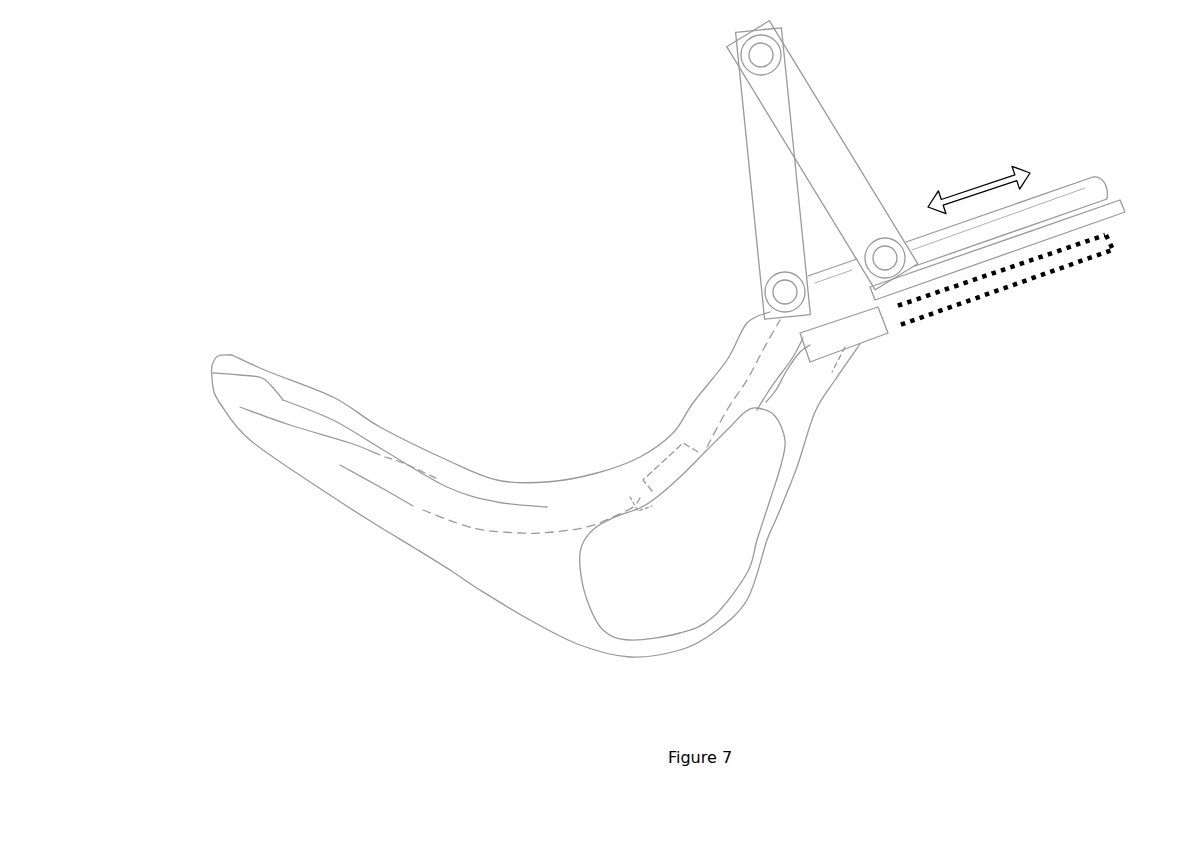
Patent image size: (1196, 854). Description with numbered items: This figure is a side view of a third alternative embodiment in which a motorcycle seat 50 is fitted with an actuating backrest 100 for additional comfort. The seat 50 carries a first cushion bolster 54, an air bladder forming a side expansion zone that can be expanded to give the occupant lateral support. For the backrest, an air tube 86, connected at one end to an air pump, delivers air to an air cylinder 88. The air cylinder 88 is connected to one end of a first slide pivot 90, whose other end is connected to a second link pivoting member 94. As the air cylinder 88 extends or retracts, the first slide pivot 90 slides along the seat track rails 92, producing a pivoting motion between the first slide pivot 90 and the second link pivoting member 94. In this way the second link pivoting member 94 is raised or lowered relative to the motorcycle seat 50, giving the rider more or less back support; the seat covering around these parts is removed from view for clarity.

The motorcycle seat 50 is at (265, 530).
The first cushion bolster 54 is at (730, 585).
The air tube 86 is at (782, 370).
The air cylinder 88 is at (877, 332).
The first slide pivot 90 is at (843, 167).
The seat track rails 92 is at (1117, 212).
The second link pivoting member 94 is at (753, 148).
The actuating backrest 100 is at (670, 60).